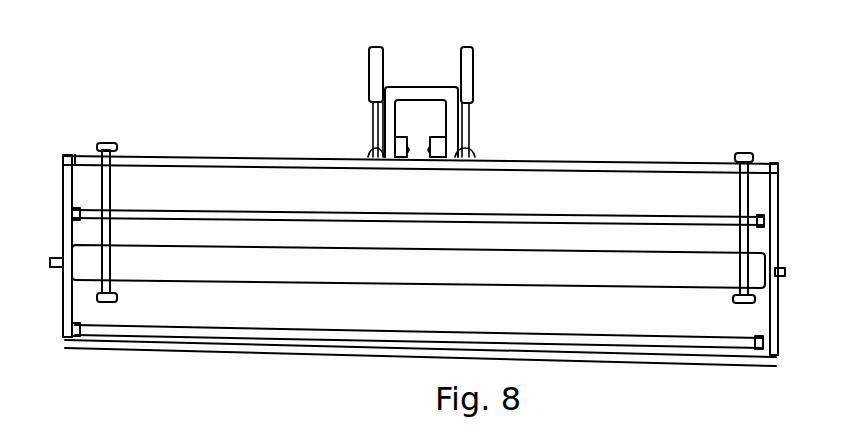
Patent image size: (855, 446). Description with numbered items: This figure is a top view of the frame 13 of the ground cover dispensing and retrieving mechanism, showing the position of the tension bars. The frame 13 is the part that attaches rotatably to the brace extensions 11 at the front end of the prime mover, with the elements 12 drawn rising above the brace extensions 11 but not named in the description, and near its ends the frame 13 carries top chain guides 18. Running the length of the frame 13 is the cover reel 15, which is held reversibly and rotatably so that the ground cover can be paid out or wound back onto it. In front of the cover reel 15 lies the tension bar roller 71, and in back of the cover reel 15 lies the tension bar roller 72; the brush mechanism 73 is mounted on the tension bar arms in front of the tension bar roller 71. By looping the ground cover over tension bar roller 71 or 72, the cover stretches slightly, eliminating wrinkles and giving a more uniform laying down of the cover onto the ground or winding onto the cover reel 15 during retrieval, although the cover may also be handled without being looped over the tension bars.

The brace extensions 11 is at (445, 124).
The upright posts 12 is at (452, 67).
The frame 13 is at (628, 160).
The cover reel 15 is at (556, 275).
The top chain guides 18 is at (115, 185).
The tension bar roller 71 is at (413, 330).
The tension bar roller 72 is at (475, 212).
The brush mechanism 73 is at (223, 357).